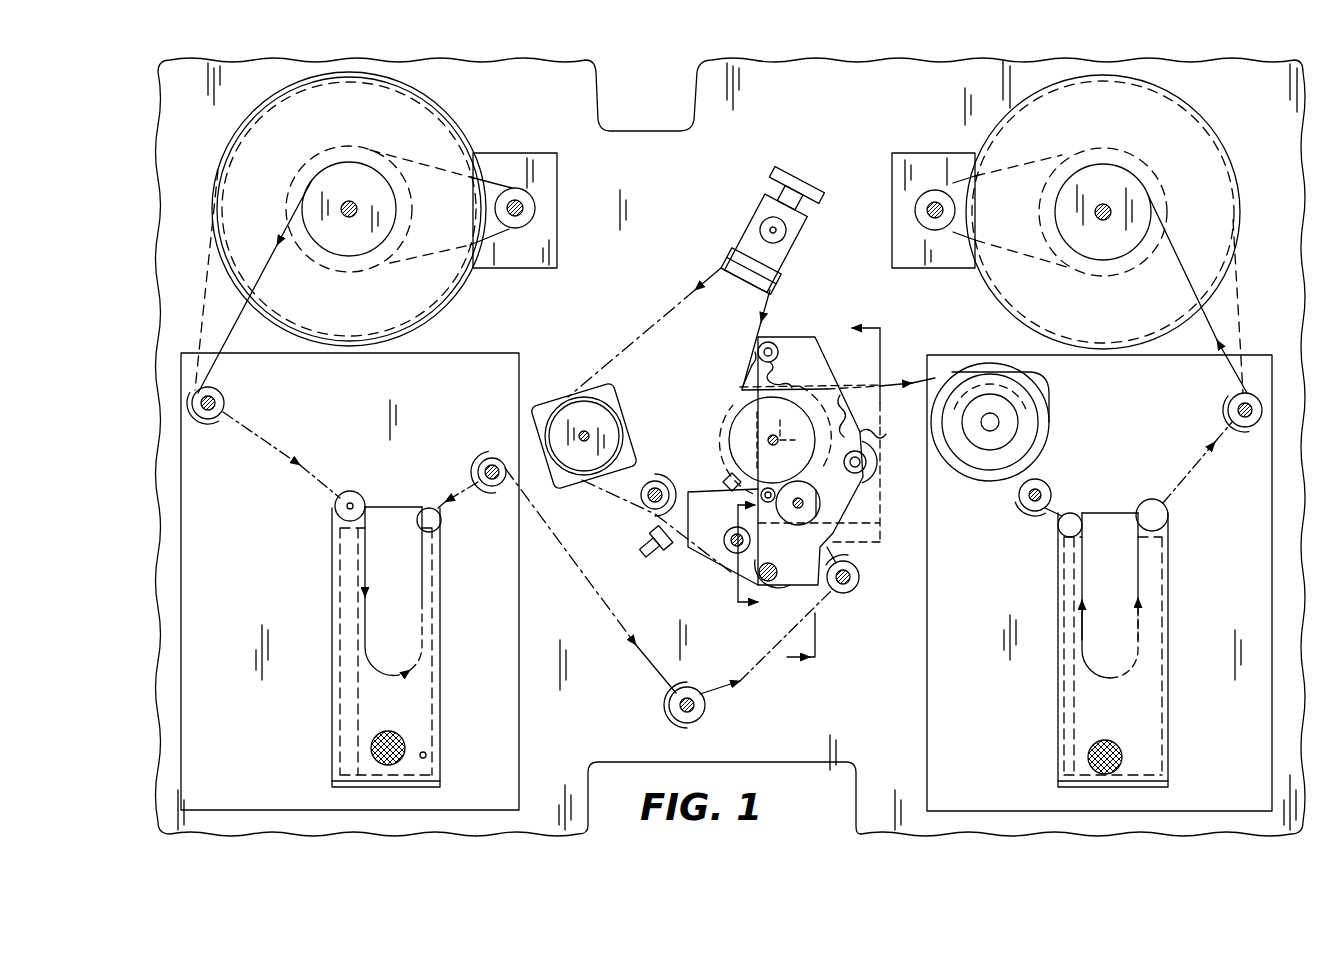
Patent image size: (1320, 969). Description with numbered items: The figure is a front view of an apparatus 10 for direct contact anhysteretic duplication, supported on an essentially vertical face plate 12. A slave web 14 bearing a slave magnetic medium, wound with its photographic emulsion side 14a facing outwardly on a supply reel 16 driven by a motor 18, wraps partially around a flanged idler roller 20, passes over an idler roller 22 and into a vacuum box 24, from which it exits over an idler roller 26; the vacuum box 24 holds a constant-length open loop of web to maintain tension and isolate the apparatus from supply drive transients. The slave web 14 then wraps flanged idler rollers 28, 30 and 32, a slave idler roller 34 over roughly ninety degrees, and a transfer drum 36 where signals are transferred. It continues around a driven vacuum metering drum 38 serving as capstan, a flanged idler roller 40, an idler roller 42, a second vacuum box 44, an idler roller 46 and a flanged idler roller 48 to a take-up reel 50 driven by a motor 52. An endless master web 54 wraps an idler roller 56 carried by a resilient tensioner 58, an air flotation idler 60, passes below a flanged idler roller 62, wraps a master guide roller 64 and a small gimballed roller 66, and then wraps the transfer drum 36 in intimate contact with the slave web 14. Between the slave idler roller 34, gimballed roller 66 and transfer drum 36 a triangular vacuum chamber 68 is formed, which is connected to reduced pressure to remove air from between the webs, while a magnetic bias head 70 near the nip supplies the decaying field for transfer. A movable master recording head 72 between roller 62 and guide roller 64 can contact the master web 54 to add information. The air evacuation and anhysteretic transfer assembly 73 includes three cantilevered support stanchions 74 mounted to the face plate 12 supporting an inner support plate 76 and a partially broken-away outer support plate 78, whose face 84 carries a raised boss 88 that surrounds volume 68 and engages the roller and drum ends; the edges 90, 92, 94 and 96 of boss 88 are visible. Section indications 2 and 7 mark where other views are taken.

The apparatus 10 is at (667, 122).
The face plate 12 is at (814, 99).
The slave web 14 is at (585, 592).
The photographic emulsion side 14a is at (728, 700).
The supply reel 16 is at (443, 100).
The motor 18 is at (538, 153).
The flanged idler roller 20 is at (226, 400).
The idler roller 22 is at (337, 500).
The vacuum box 24 is at (425, 726).
The idler roller 26 is at (440, 522).
The flanged idler roller 28 is at (492, 452).
The flanged idler roller 30 is at (668, 715).
The flanged idler roller 32 is at (860, 570).
The slave idler roller 34 is at (841, 519).
The transfer drum 36 is at (845, 411).
The vacuum metering drum 38 is at (1040, 430).
The flanged idler roller 40 is at (1052, 490).
The idler roller 42 is at (1060, 528).
The vacuum box 44 is at (1085, 702).
The idler roller 46 is at (1169, 512).
The flanged idler roller 48 is at (1228, 412).
The take-up reel 50 is at (1200, 106).
The motor 52 is at (918, 152).
The master web 54 is at (628, 342).
The idler roller 56 is at (764, 201).
The tensioner 58 is at (798, 238).
The air flotation idler 60 is at (612, 408).
The flanged idler roller 62 is at (656, 480).
The master guide roller 64 is at (722, 578).
The gimballed roller 66 is at (771, 489).
The vacuum chamber 68 is at (780, 441).
The magnetic bias head 70 is at (726, 477).
The master recording head 72 is at (642, 543).
The air evacuation and anhysteretic transfer assembly 73 is at (870, 428).
The support stanchions 74 is at (782, 328).
The inner support plate 76 is at (750, 356).
The outer support plate 78 is at (812, 338).
The face 84 is at (781, 353).
The boss 88 is at (880, 498).
The edge 90 is at (730, 428).
The edge 92 is at (745, 392).
The edge 94 is at (872, 455).
The edge 96 is at (778, 566).
The section line 2- 2 is at (833, 492).
The section line 7- 7 is at (738, 568).